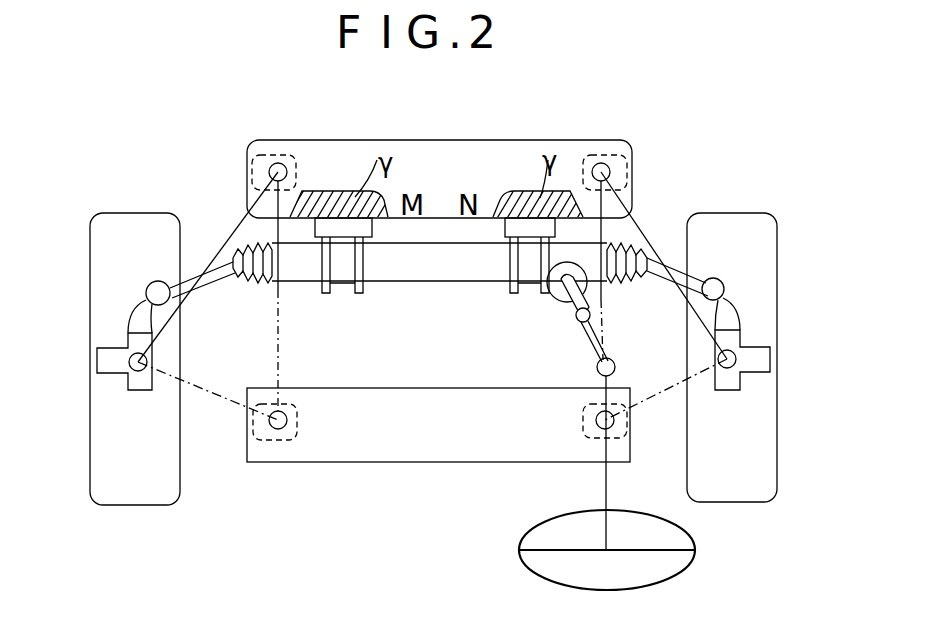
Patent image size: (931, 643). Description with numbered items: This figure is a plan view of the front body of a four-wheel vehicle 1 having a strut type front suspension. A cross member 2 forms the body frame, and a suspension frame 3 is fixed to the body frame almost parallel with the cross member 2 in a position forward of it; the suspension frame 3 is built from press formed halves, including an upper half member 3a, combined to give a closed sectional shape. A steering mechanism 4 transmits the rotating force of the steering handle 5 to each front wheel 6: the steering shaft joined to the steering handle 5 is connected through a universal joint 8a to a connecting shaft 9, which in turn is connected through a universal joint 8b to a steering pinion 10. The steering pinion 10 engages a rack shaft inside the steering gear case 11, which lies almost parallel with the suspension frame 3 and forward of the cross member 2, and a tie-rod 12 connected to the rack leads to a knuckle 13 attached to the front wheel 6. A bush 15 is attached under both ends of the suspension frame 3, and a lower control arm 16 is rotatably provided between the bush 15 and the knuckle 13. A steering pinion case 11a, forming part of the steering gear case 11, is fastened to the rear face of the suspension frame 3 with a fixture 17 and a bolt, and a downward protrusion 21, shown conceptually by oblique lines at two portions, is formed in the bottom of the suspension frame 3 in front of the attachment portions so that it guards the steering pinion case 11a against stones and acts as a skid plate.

The four-wheel vehicle 1 is at (703, 131).
The cross member 2 is at (426, 445).
The suspension frame 3 is at (436, 140).
The upper half member 3a is at (353, 168).
The steering mechanism 4 is at (546, 354).
The steering handle 5 is at (680, 572).
The front wheel 6 is at (140, 213).
The universal joint 8a is at (614, 365).
The universal joint 8b is at (578, 317).
The connecting shaft 9 is at (597, 333).
The steering pinion 10 is at (565, 294).
The steering gear case 11 is at (414, 258).
The steering pinion case 11a is at (573, 268).
The tie-rod 12 is at (191, 275).
The knuckle 13 is at (133, 336).
The bush 15 is at (272, 140).
The lower control arm 16 is at (232, 228).
The fixture 17 is at (525, 230).
The downward protrusion 21 is at (319, 190).